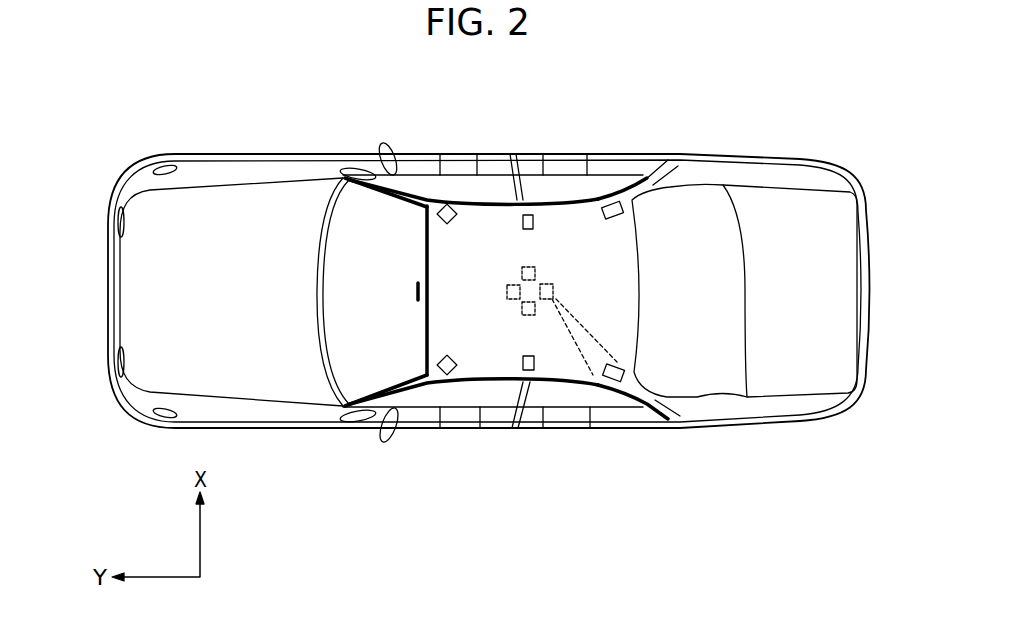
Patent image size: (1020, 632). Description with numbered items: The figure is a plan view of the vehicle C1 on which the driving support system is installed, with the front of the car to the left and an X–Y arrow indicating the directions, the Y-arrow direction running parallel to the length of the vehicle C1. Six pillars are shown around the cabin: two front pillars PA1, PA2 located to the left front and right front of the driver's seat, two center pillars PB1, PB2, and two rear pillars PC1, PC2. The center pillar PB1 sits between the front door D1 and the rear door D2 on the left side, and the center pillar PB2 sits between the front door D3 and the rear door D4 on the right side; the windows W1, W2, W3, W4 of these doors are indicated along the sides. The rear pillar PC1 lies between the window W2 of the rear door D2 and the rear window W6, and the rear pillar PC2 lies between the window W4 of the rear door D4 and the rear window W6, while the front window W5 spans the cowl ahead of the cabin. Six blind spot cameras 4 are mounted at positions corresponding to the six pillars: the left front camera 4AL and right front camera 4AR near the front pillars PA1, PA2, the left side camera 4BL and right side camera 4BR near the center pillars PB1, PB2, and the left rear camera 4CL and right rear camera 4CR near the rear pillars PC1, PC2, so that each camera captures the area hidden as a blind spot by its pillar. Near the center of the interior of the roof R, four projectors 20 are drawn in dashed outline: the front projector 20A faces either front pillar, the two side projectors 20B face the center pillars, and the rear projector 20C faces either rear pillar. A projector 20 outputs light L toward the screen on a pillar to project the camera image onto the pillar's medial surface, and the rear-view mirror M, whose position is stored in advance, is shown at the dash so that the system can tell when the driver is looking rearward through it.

The vehicle C1 is at (110, 214).
The front window W5 is at (321, 271).
The rear window W6 is at (745, 301).
The window of the front door W1 is at (480, 407).
The window of the rear door W2 is at (590, 407).
The window of the front door W3 is at (480, 177).
The window of the rear door W4 is at (588, 175).
The front door D1 is at (438, 425).
The rear door D2 is at (547, 428).
The front door D3 is at (438, 155).
The rear door D4 is at (547, 155).
The front pillar PA1 is at (350, 423).
The front pillar PA2 is at (350, 162).
The center pillar PB1 is at (510, 430).
The center pillar PB2 is at (507, 155).
The rear pillar PC1 is at (643, 427).
The rear pillar PC2 is at (672, 160).
The roof R is at (644, 290).
The light L is at (636, 370).
The rear-view mirror M is at (414, 292).
The blind spot camera 4 is at (439, 362).
The right front camera 4AR is at (449, 229).
The left front camera 4AL is at (451, 357).
The right side camera 4BR is at (522, 223).
The left side camera 4BL is at (536, 363).
The right rear camera 4CR is at (614, 220).
The left rear camera 4CL is at (617, 364).
The projector 20 is at (537, 302).
The front projector 20A is at (506, 292).
The side projector 20B is at (521, 273).
The rear projector 20C is at (555, 288).